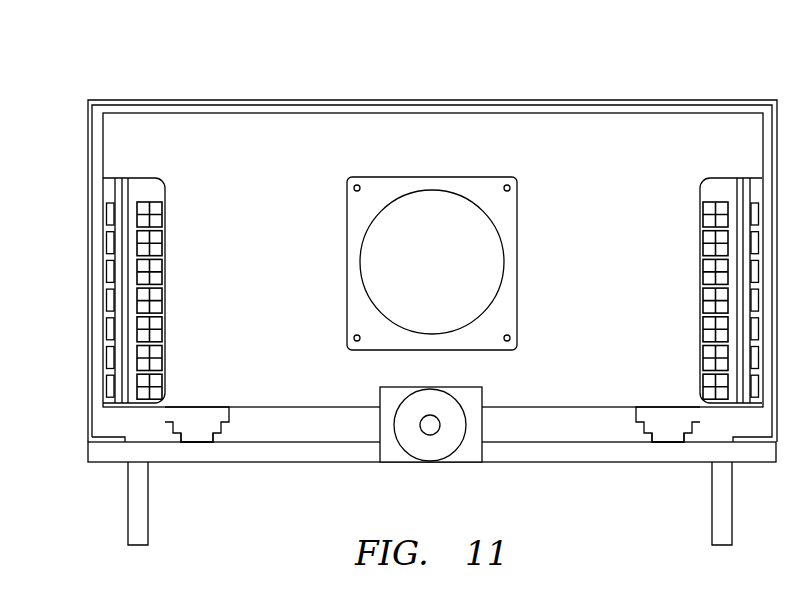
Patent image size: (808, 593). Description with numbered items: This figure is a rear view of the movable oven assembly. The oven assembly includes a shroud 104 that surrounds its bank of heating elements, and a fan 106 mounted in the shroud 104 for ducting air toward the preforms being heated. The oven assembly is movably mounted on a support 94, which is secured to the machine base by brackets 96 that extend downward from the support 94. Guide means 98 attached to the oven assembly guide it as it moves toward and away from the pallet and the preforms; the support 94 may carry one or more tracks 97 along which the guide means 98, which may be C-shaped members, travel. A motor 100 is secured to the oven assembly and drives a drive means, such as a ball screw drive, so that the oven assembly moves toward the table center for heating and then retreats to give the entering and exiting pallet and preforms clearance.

The shroud 104 is at (585, 108).
The fan 106 is at (422, 203).
The guide means 98 is at (196, 414).
The tracks 97 is at (200, 440).
The support 94 is at (602, 458).
The motor 100 is at (430, 456).
The brackets 96 is at (138, 495).